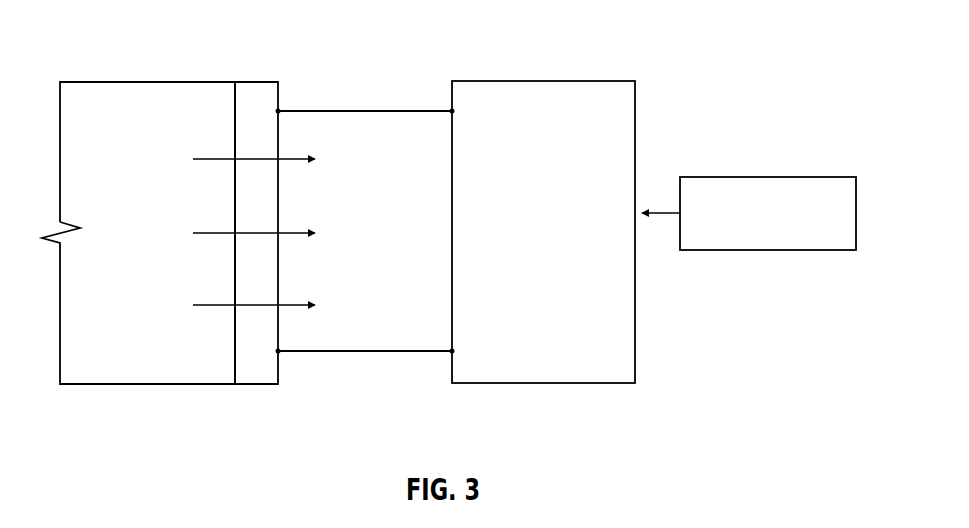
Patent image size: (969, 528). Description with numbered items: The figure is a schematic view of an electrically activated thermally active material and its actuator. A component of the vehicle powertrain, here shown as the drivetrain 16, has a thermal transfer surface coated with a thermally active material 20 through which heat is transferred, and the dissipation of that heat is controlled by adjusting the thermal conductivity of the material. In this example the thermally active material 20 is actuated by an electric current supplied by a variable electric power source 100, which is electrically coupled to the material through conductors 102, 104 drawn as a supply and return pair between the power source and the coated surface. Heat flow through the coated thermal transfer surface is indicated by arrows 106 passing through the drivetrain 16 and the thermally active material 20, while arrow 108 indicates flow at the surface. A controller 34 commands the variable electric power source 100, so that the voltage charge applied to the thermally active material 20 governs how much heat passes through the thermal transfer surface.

The drivetrain 16 is at (156, 100).
The thermally active material 20 is at (258, 92).
The controller 34 is at (805, 176).
The variable electric power source 100 is at (562, 95).
The conductor 102 is at (369, 102).
The conductor 104 is at (386, 360).
The flow direction arrows 106 is at (201, 330).
The thermal transfer surface 108 is at (248, 354).